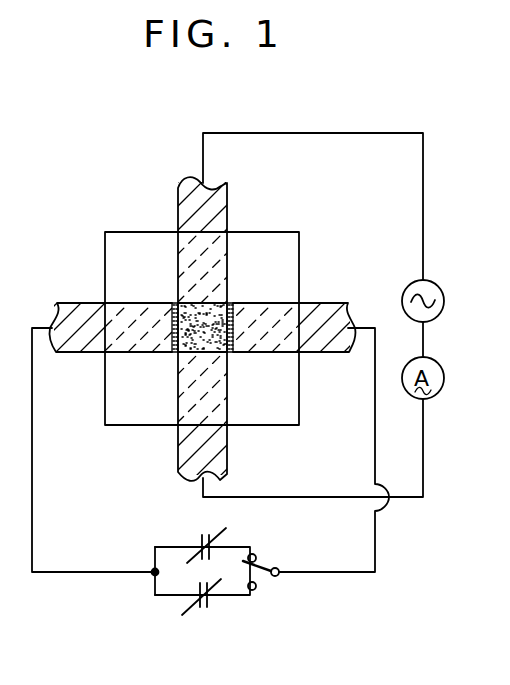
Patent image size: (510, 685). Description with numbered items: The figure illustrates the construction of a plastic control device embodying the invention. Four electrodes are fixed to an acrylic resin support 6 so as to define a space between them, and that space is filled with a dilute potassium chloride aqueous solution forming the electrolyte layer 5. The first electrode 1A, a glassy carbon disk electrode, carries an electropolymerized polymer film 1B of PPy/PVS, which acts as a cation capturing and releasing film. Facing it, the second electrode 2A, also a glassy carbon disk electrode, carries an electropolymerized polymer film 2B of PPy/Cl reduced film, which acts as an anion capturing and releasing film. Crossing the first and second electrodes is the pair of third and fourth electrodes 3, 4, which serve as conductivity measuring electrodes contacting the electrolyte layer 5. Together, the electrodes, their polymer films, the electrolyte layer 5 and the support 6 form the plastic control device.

The first electrode 1A is at (58, 352).
The electropolymerized polymer film 1B is at (172, 310).
The second electrode 2A is at (331, 303).
The electropolymerized polymer film 2B is at (236, 330).
The third electrode 3 is at (178, 202).
The fourth electrode 4 is at (178, 452).
The electrolyte layer 5 is at (232, 303).
The acrylic resin support 6 is at (116, 268).